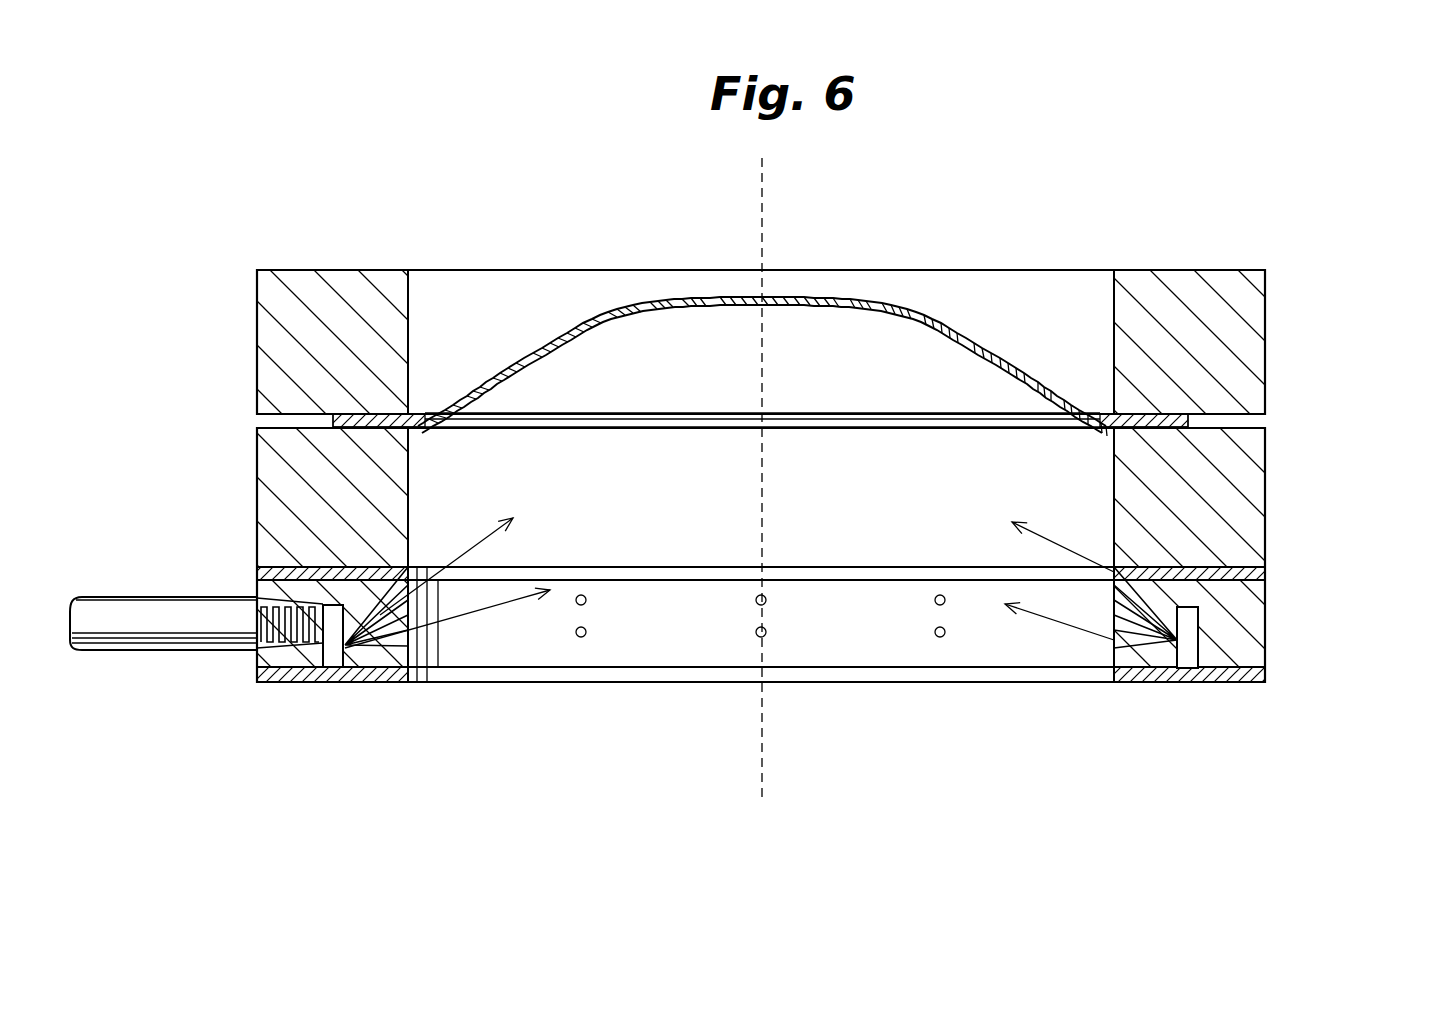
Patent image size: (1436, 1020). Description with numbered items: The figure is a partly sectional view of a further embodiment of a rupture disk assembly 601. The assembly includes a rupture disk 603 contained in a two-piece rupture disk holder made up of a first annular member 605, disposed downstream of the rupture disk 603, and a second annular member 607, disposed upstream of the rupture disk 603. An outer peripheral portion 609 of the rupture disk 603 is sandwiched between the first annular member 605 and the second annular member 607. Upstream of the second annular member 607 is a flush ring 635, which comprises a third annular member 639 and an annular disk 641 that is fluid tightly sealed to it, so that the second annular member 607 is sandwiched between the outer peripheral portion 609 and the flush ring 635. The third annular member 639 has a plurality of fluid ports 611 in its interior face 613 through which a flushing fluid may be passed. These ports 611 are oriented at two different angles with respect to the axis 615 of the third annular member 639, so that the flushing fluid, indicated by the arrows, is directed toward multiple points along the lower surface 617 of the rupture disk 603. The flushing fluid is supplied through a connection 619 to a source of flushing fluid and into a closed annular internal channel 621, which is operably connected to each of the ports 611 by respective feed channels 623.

The rupture disk assembly 601 is at (898, 240).
The rupture disk 603 is at (826, 300).
The first annular member 605 is at (1183, 271).
The second annular member 607 is at (1265, 462).
The outer peripheral portion 609 is at (1162, 410).
The fluid ports 611 is at (586, 601).
The interior face 613 is at (410, 653).
The axis 615 is at (762, 750).
The lower surface 617 is at (715, 326).
The connection 619 is at (158, 597).
The closed annular internal channel 621 is at (1198, 622).
The feed channels 623 is at (408, 558).
The flush ring 635 is at (1278, 598).
The third annular member 639 is at (1265, 652).
The annular disk 641 is at (1225, 683).